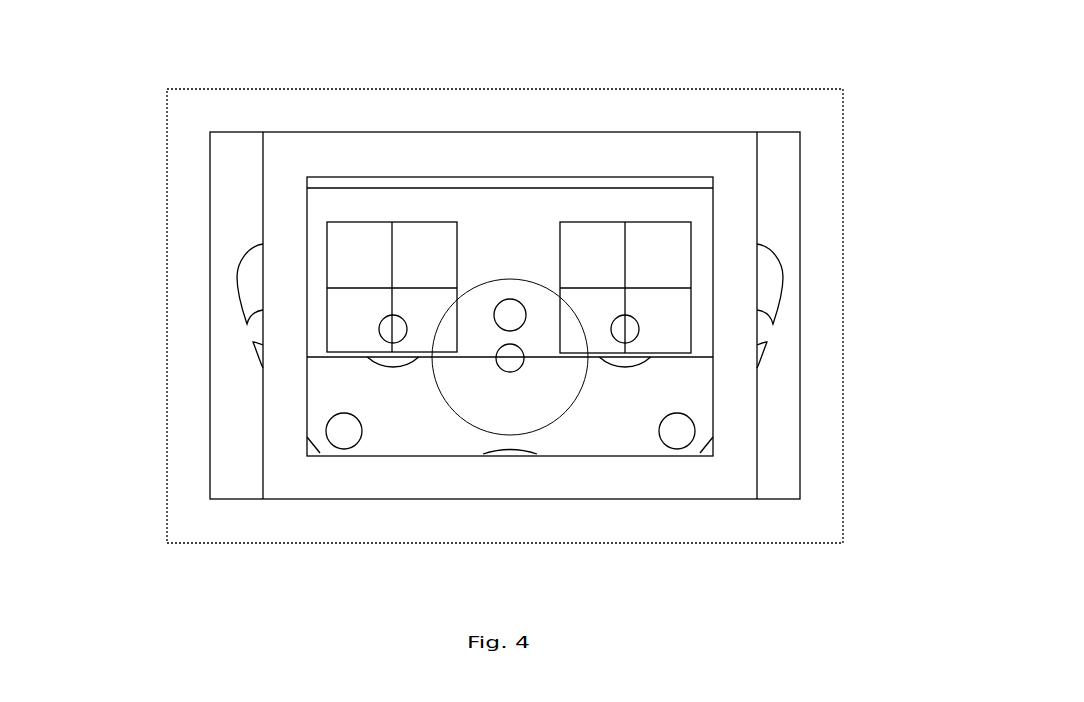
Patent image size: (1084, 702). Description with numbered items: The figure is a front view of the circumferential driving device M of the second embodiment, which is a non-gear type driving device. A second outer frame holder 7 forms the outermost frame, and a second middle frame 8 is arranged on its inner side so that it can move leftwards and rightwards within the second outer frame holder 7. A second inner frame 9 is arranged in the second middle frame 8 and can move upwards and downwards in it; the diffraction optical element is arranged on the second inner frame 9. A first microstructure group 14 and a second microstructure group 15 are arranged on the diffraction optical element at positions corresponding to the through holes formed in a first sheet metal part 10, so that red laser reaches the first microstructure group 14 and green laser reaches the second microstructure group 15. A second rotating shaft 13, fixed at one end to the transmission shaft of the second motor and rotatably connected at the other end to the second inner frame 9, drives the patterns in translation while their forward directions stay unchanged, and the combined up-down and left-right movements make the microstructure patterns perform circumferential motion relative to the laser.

The circumferential driving device M is at (785, 86).
The second outer frame holder 7 is at (605, 112).
The second middle frame 8 is at (482, 153).
The second inner frame 9 is at (350, 180).
The first sheet metal part 10 is at (770, 266).
The second rotating shaft 13 is at (522, 327).
The first microstructure group 14 is at (327, 288).
The second microstructure group 15 is at (691, 288).